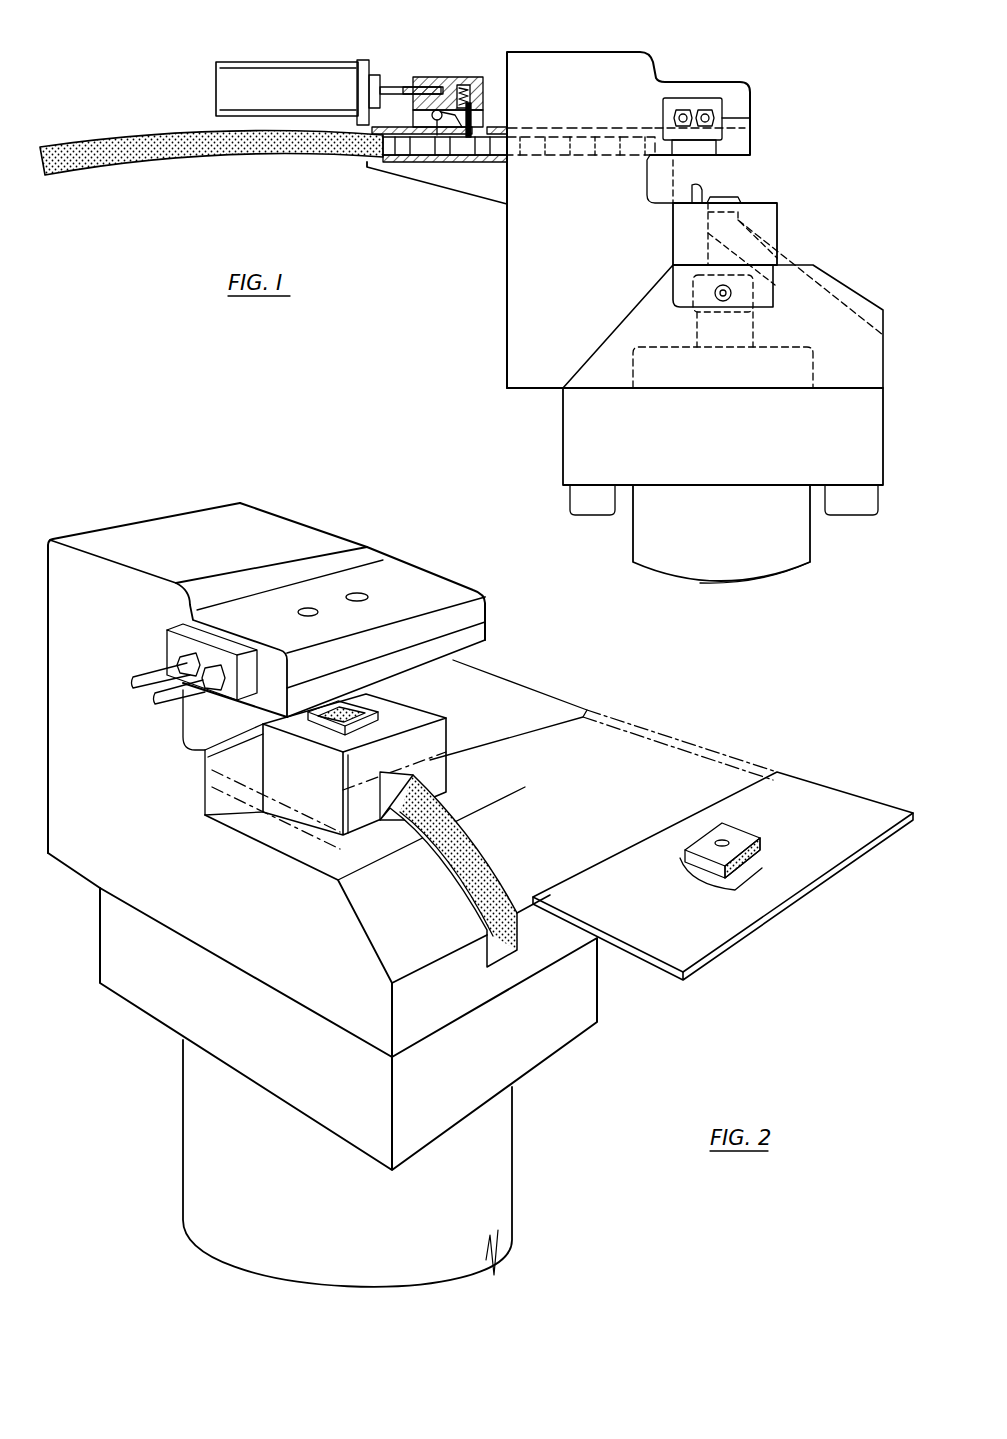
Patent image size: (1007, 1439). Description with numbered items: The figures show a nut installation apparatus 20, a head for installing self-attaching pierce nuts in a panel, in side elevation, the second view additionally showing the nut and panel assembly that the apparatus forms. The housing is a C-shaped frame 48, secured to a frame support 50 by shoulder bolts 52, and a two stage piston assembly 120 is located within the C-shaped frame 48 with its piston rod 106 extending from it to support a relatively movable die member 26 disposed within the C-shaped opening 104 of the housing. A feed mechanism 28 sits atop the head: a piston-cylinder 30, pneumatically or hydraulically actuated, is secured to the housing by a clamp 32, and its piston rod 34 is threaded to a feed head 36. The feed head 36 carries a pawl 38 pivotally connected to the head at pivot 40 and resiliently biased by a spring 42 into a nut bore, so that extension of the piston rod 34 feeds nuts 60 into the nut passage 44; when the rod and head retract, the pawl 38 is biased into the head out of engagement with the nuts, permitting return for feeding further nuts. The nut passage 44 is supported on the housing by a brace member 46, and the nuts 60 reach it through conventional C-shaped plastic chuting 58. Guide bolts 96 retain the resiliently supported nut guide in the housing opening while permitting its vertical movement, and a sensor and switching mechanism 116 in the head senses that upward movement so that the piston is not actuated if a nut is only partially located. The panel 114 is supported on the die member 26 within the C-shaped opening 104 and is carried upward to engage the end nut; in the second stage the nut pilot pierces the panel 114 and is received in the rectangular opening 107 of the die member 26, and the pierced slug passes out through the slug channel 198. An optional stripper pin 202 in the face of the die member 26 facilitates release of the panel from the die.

In FIG. 1, the nut installation apparatus 20 is at (648, 50).
In FIG. 2, the nut installation apparatus 20 is at (325, 511).
In FIG. 1, the die member 26 is at (772, 203).
In FIG. 2, the die member 26 is at (433, 711).
In FIG. 1, the feed mechanism 28 is at (281, 48).
In FIG. 1, the piston-cylinder 30 is at (226, 78).
In FIG. 1, the clamp 32 is at (370, 60).
In FIG. 1, the piston rod 34 is at (398, 88).
In FIG. 1, the feed head 36 is at (432, 77).
In FIG. 1, the pawl 38 is at (480, 115).
In FIG. 1, the pivot 40 is at (450, 137).
In FIG. 1, the spring 42 is at (463, 85).
In FIG. 1, the nut passage 44 is at (400, 160).
In FIG. 1, the brace member 46 is at (492, 205).
In FIG. 1, the C-shaped frame 48 is at (522, 291).
In FIG. 2, the C-shaped frame 48 is at (122, 535).
In FIG. 1, the frame support 50 is at (568, 438).
In FIG. 2, the frame support 50 is at (105, 953).
In FIG. 1, the shoulder bolts 52 is at (572, 500).
In FIG. 1, the plastic chuting 58 is at (155, 160).
In FIG. 1, the nuts 60 is at (470, 150).
In FIG. 2, the nuts 60 is at (745, 838).
In FIG. 2, the guide bolts 96 is at (357, 593).
In FIG. 1, the C-shaped opening 104 is at (760, 186).
In FIG. 1, the piston rod 106 is at (690, 332).
In FIG. 2, the rectangular opening 107 is at (365, 712).
In FIG. 2, the panel 114 is at (551, 705).
In FIG. 1, the sensor and switching mechanism 116 is at (735, 92).
In FIG. 2, the sensor and switching mechanism 116 is at (165, 656).
In FIG. 1, the two stage piston assembly 120 is at (728, 597).
In FIG. 2, the two stage piston assembly 120 is at (520, 1167).
In FIG. 1, the slug channel 198 is at (828, 276).
In FIG. 2, the slug channel 198 is at (470, 864).
In FIG. 1, the stripper pin 202 is at (695, 192).